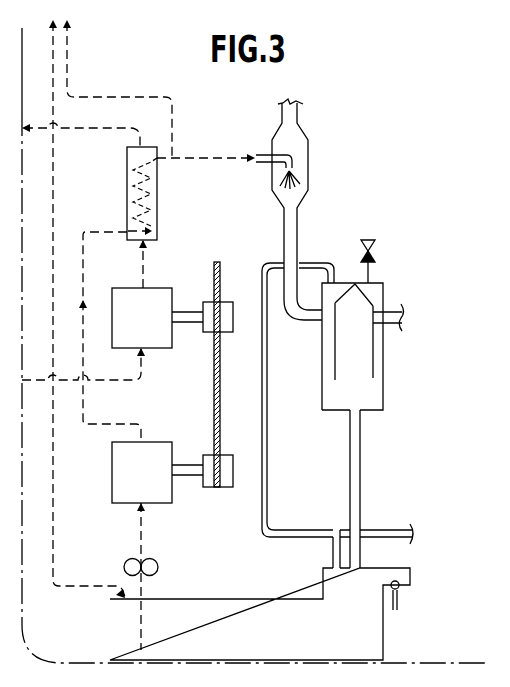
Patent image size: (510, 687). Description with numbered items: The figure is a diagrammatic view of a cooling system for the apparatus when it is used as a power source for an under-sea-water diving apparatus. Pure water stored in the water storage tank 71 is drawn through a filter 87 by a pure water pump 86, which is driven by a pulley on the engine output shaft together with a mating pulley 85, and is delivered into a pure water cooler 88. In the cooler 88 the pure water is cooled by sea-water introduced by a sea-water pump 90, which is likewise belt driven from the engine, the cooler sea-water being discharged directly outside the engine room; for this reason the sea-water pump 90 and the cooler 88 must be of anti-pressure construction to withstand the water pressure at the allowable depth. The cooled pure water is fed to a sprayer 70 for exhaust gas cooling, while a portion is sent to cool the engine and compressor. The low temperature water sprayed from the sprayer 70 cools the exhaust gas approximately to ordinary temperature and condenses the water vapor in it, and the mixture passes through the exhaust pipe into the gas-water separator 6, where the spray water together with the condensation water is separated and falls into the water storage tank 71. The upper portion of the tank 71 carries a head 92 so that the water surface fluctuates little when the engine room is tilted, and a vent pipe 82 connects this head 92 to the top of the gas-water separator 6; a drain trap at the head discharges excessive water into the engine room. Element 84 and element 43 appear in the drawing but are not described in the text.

The gas-water separator 6 is at (322, 397).
The sprayer 70 is at (286, 168).
The water storage tank 71 is at (260, 614).
The vent pipe 82 is at (331, 550).
The coupling block 84 is at (227, 335).
The mating pulley 85 is at (211, 488).
The pure water pump 86 is at (142, 472).
The filter 87 is at (155, 568).
The pure water cooler 88 is at (157, 208).
The sea-water pump 90 is at (142, 318).
The head 92 is at (392, 567).
The valve ball 43 is at (400, 588).